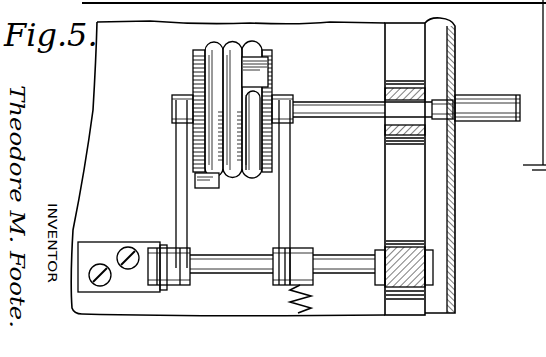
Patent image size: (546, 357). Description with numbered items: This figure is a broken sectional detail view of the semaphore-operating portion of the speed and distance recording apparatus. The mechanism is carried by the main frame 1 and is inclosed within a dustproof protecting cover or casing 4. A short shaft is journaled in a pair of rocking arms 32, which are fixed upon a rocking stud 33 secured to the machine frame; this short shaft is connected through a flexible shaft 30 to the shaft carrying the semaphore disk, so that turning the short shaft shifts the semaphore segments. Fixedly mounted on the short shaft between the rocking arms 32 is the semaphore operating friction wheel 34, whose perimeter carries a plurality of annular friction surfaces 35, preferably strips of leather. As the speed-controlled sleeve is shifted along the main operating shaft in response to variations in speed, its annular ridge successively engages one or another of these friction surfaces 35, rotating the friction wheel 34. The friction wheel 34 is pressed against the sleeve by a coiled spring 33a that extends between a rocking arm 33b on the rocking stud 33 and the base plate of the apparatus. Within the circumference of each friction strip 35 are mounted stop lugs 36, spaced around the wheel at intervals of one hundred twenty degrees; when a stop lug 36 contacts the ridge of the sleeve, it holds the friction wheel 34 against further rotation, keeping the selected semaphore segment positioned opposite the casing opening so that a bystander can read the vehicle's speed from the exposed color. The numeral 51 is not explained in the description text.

The main frame 1 is at (392, 60).
The protecting cover or casing 4 is at (453, 171).
The flexible shaft 30 is at (497, 90).
The drive shaft 51 is at (344, 113).
The rocking arms 32 is at (176, 204).
The rocking stud 33 is at (334, 267).
The coiled spring 33a is at (316, 297).
The rocking arm 33b is at (308, 248).
The semaphore operating friction wheel 34 is at (195, 80).
The annular friction surfaces 35 is at (206, 53).
The stop lugs 36 is at (268, 61).